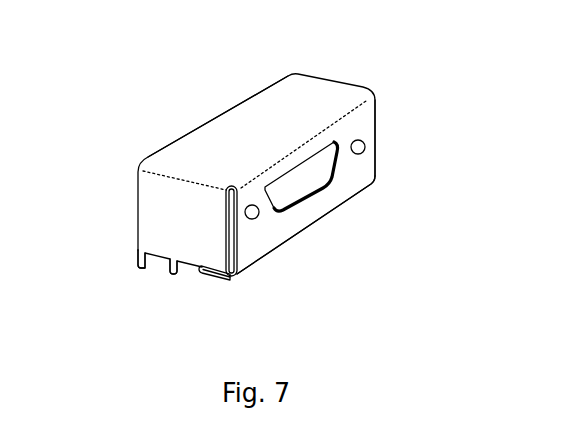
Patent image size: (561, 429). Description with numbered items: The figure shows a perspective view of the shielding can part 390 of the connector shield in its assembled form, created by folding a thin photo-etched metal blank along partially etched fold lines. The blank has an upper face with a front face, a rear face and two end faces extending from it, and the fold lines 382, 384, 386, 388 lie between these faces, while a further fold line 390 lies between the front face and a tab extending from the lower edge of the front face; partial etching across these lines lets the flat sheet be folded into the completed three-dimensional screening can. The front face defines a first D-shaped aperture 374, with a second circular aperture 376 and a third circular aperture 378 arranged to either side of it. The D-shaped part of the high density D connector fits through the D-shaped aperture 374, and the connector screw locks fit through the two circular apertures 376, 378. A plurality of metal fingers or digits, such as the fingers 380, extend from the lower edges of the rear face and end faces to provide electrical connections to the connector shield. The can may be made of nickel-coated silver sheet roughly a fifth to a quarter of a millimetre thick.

The first D-shaped aperture 374 is at (302, 184).
The second circular aperture 376 is at (252, 219).
The third circular aperture 378 is at (365, 147).
The metal fingers 380 is at (142, 268).
The fold line 382 is at (299, 139).
The fold line 384 is at (323, 75).
The fold line 386 is at (222, 112).
The fold line 388 is at (183, 177).
The fold line / shielding can part 390 is at (298, 234).